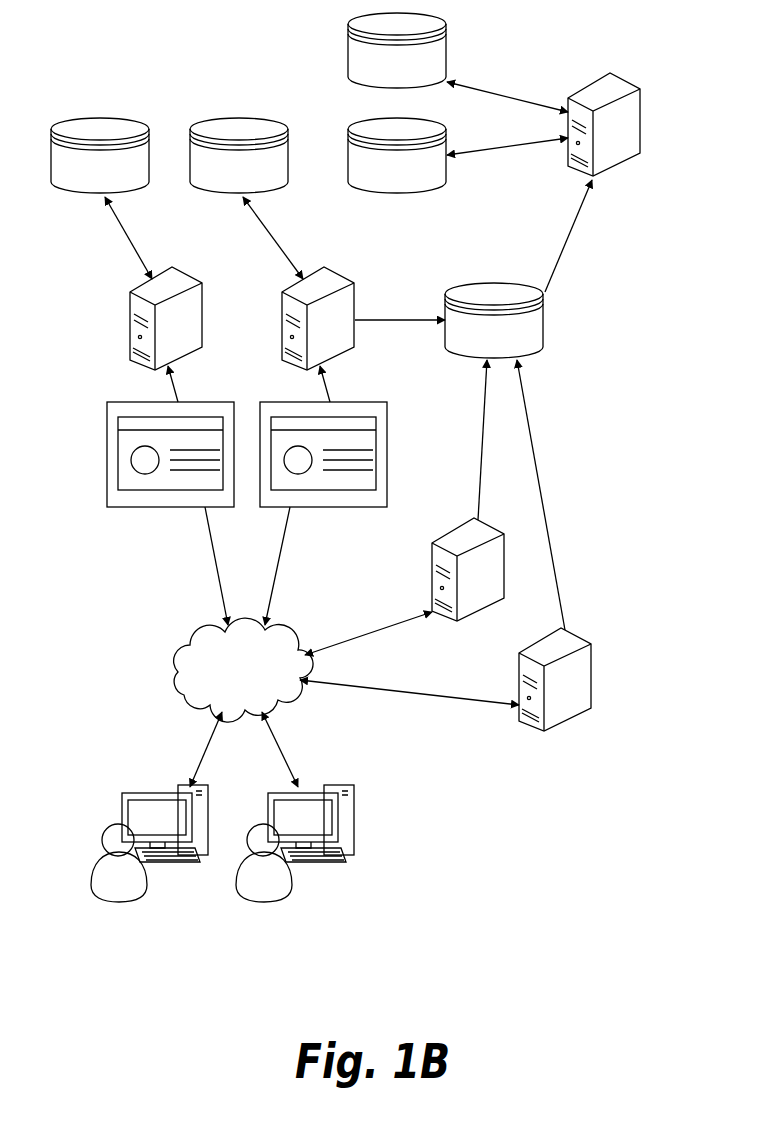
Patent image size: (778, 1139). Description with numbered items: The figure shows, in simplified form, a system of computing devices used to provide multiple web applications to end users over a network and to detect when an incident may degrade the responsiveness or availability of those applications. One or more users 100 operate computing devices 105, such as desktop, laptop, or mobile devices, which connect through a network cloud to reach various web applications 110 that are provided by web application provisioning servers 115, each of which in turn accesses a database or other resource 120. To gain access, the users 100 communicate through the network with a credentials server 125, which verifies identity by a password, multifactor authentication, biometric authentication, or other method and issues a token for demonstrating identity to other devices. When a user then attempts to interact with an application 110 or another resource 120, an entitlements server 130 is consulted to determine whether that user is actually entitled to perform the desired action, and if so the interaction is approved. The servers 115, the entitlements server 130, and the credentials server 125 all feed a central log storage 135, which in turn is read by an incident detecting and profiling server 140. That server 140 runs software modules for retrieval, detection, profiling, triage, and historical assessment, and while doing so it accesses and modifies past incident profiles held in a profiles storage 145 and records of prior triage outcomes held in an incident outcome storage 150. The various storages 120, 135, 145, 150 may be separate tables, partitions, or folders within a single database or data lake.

The user 100 is at (97, 890).
The computing device 105 is at (238, 823).
The web application 110 is at (107, 402).
The web application provisioning server 115 is at (128, 292).
The database or other resource 120 is at (169, 155).
The credentials server 125 is at (548, 732).
The entitlements server 130 is at (432, 582).
The log storage 135 is at (494, 320).
The incident detecting and profiling server 140 is at (568, 95).
The profiles storage 145 is at (397, 155).
The incident outcome storage 150 is at (397, 50).